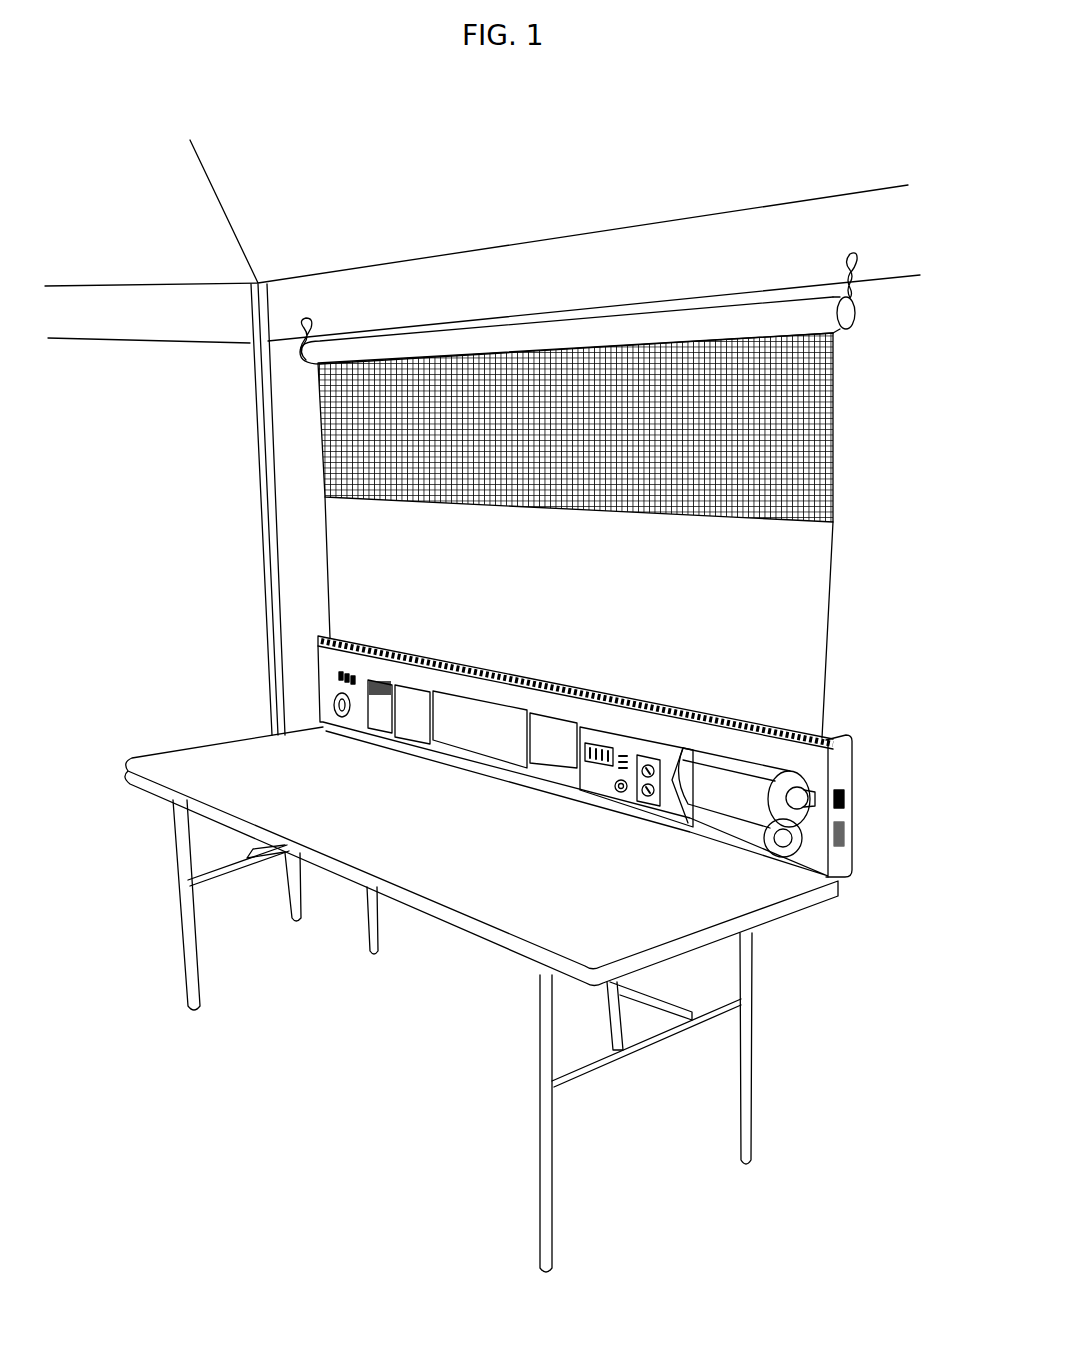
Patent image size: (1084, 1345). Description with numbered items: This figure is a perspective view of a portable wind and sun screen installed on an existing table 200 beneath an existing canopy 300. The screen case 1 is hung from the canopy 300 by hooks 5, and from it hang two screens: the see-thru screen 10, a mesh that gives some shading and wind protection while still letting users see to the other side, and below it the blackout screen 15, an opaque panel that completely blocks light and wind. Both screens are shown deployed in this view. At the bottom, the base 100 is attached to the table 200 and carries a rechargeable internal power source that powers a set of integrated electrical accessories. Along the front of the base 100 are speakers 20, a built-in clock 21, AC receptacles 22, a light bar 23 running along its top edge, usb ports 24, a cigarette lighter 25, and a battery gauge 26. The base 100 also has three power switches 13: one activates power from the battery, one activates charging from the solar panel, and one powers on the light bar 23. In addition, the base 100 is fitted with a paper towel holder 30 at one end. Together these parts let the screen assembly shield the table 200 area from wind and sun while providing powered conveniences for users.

The screen case 1 is at (853, 322).
The hooks 5 is at (862, 283).
The see-thru screen 10 is at (836, 443).
The blackout screen 15 is at (822, 580).
The base 100 is at (316, 643).
The canopy 300 is at (292, 343).
The power switches 13 is at (338, 675).
The battery gauge 26 is at (366, 690).
The speakers 20 is at (337, 703).
The built-in clock 21 is at (607, 742).
The usb ports 24 is at (633, 757).
The cigarette lighter 25 is at (624, 793).
The AC receptacles 22 is at (660, 800).
The light bar 23 is at (853, 743).
The paper towel holder 30 is at (808, 795).
The table 200 is at (212, 777).